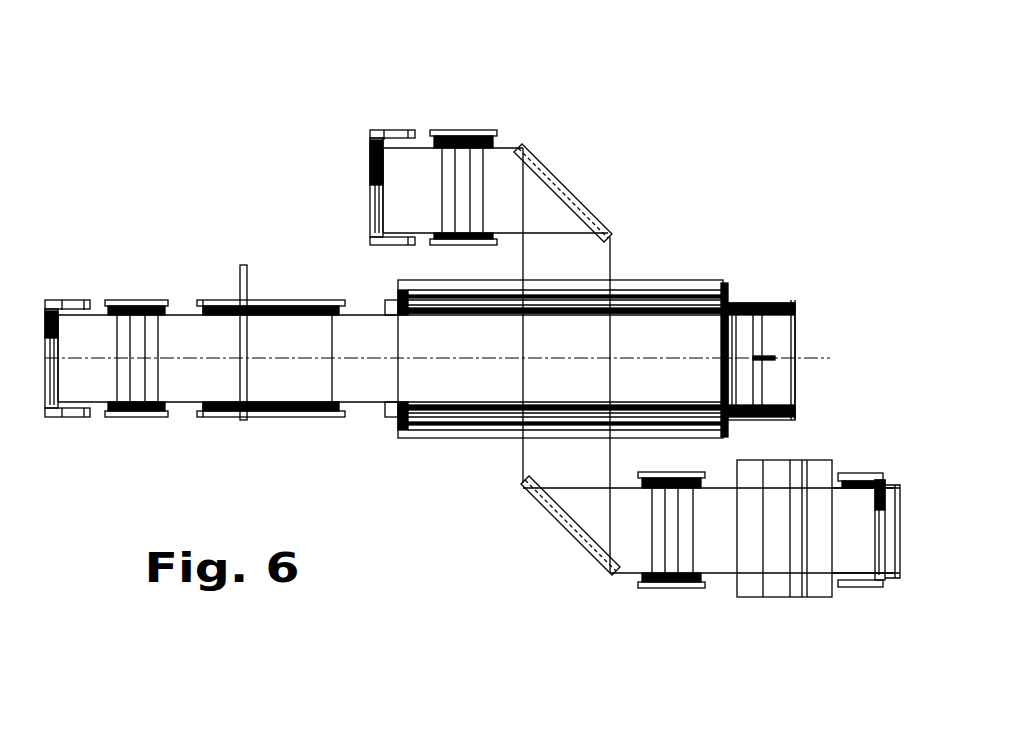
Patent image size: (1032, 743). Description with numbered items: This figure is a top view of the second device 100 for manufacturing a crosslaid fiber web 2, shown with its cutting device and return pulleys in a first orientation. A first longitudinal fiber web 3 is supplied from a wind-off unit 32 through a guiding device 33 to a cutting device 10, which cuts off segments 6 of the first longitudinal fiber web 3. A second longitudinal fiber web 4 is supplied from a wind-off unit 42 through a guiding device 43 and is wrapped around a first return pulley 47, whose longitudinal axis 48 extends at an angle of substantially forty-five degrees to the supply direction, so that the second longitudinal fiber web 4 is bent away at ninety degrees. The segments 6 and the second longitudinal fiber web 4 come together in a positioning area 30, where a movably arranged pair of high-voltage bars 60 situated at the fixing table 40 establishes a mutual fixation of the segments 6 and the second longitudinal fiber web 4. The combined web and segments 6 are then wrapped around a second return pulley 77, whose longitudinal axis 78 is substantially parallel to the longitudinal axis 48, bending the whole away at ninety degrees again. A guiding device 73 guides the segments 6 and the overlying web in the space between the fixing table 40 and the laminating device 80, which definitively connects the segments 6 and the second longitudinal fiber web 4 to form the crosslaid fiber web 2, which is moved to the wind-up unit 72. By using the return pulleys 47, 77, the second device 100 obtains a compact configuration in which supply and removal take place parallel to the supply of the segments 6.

The crosslaid fiber web 2 is at (848, 525).
The first longitudinal fiber web 3 is at (92, 335).
The second longitudinal fiber web 4 is at (420, 170).
The segment 6 is at (294, 333).
The cutting device 10 is at (241, 233).
The positioning area 30 is at (573, 340).
The wind-off unit 32 is at (57, 275).
The guiding device 33 is at (133, 280).
The fixing table 40 is at (818, 338).
The wind-off unit 42 is at (386, 117).
The guiding device 43 is at (462, 115).
The first return pulley 47 is at (550, 178).
The longitudinal axis of the first return pulley 48 is at (518, 146).
The pair of high-voltage bars 60 is at (732, 278).
The wind-up unit 72 is at (871, 607).
The guiding device 73 is at (666, 595).
The second return pulley 77 is at (568, 527).
The longitudinal axis of the second return pulley 78 is at (525, 480).
The laminating device 80 is at (750, 588).
The second device 100 is at (637, 143).